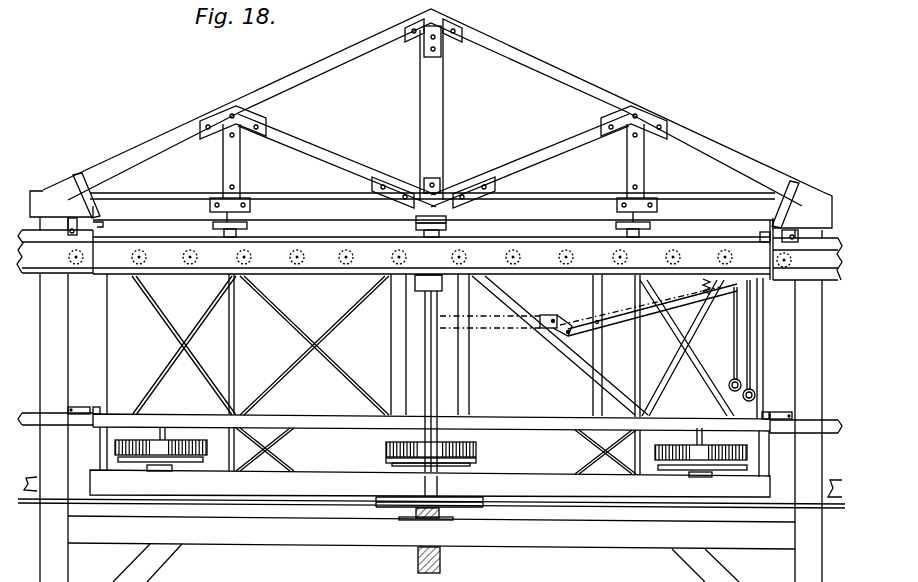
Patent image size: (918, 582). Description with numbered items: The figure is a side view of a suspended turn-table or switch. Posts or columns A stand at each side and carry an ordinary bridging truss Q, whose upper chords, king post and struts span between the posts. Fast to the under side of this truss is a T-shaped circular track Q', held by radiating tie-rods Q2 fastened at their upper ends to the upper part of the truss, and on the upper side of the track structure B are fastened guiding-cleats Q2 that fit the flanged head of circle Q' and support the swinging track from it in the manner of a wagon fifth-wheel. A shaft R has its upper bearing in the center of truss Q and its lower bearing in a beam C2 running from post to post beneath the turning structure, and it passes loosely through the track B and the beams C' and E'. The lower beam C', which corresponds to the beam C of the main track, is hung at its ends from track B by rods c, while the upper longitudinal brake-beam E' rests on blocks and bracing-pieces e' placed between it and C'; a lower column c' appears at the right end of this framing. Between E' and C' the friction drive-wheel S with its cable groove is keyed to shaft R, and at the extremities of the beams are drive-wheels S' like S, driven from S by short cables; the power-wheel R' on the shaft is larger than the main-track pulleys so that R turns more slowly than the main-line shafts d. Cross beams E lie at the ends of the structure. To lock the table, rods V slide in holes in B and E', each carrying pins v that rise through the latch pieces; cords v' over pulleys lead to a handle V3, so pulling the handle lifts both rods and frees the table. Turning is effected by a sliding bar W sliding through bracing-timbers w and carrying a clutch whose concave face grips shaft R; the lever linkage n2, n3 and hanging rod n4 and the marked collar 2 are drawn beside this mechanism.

The truss Q is at (431, 118).
The circular track Q' is at (444, 161).
The guiding-cleats Q2 is at (250, 235).
The track structure B is at (429, 250).
The pin v is at (433, 310).
The cords v' is at (432, 318).
The posts or columns A is at (58, 565).
The rod V is at (443, 346).
The handle V3 is at (756, 394).
The rods c is at (439, 345).
The lower column c' is at (774, 454).
The cross beam E is at (430, 412).
The longitudinal brake-beam E' is at (431, 412).
The blocks and bracing-pieces e' is at (363, 450).
The friction drive-wheel S is at (437, 452).
The drive-wheels S' is at (431, 451).
The sliding bar W is at (435, 287).
The collar 2 is at (424, 282).
The shaft R is at (438, 394).
The power-wheel R' is at (440, 508).
The bracing-timbers w is at (509, 302).
The lever link n2 is at (558, 315).
The lever rod n3 is at (699, 285).
The hanging rod n4 is at (733, 338).
The shafts d is at (597, 324).
The beam C is at (431, 491).
The lower beam C' is at (430, 483).
The beam C2 is at (431, 549).